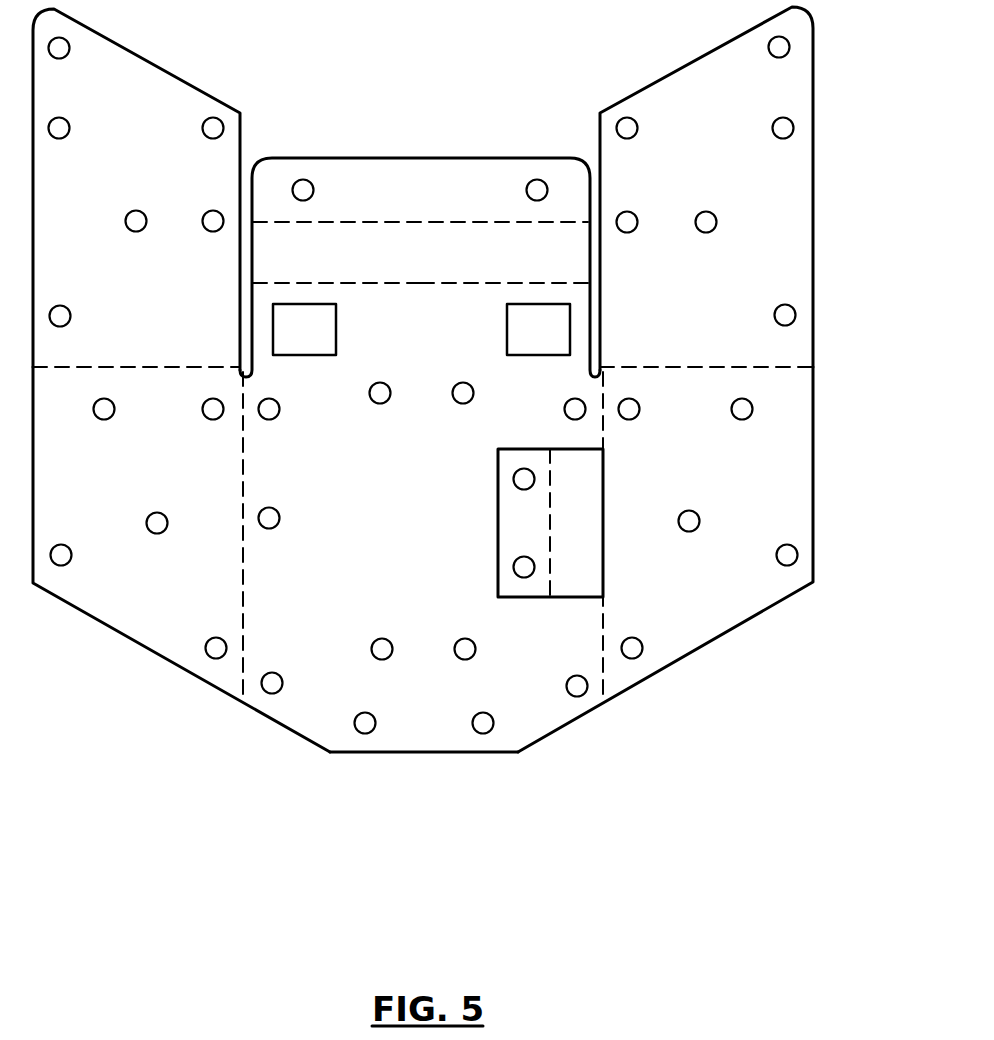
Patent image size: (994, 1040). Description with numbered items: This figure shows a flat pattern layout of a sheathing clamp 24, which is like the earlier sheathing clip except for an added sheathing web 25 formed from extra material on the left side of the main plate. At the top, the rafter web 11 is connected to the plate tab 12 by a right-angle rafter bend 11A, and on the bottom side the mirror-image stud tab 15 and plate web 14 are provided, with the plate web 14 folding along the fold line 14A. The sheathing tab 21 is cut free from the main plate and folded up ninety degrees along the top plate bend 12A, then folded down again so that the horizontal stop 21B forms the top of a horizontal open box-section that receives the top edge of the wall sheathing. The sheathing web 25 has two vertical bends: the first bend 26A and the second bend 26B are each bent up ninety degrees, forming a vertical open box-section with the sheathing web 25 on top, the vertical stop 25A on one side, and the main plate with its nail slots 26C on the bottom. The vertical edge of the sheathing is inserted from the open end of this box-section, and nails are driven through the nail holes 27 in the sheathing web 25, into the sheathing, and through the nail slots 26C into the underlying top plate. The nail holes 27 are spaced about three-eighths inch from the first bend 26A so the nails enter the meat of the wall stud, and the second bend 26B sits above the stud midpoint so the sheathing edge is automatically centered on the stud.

The rafter web 11 is at (698, 87).
The rafter bend 11A is at (778, 367).
The plate tab 12 is at (697, 627).
The top plate bend 12A is at (605, 667).
The plate web 14 is at (157, 607).
The fold line of left base flange 14A is at (242, 666).
The stud tab 15 is at (118, 80).
The sheathing tab 21 is at (542, 523).
The horizontal stop 21B is at (587, 567).
The sheathing clamp 24 is at (524, 704).
The sheathing web 25 is at (455, 177).
The vertical stop 25A is at (542, 243).
The first bend 26A is at (457, 283).
The second bend 26B is at (353, 282).
The nail slots 26C is at (312, 317).
The nail holes 27 is at (540, 180).